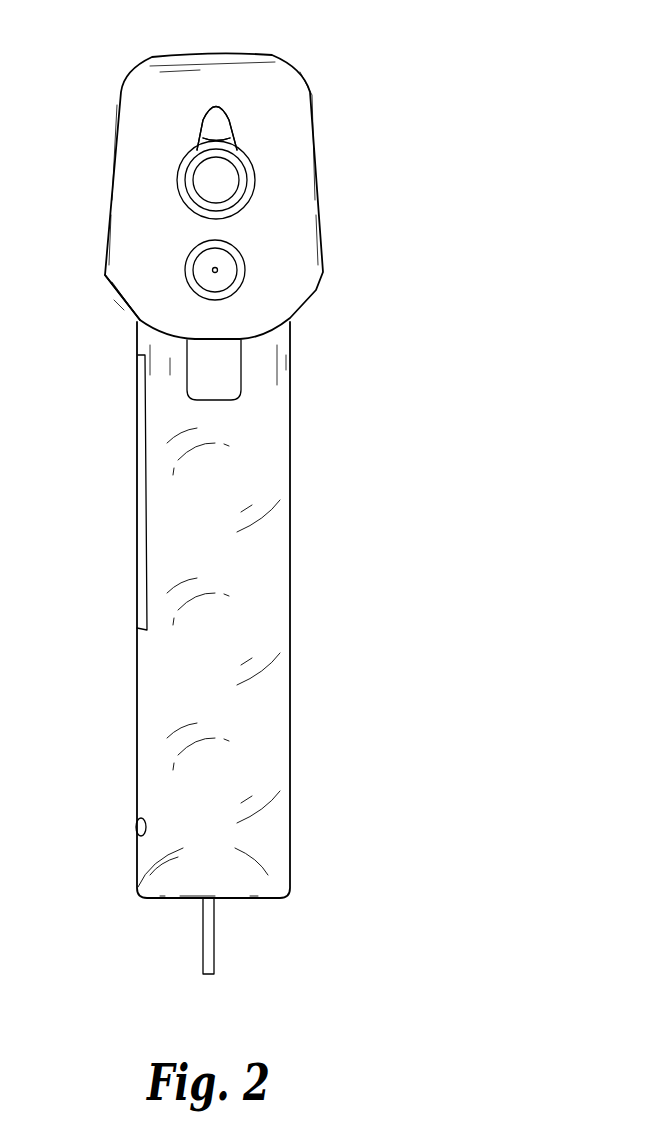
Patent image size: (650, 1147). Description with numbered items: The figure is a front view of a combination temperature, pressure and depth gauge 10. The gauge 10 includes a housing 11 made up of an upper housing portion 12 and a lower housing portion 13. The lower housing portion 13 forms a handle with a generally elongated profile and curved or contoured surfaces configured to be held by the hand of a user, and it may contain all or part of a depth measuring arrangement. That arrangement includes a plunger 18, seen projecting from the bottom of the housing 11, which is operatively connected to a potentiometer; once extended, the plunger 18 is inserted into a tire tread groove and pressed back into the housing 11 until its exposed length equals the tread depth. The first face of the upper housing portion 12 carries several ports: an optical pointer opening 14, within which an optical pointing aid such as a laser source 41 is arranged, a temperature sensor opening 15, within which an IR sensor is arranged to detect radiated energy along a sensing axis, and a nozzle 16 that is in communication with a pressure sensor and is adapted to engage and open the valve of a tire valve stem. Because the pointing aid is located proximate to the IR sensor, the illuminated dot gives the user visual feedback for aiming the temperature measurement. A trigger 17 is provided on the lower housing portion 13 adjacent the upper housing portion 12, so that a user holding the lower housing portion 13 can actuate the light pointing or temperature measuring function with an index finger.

The gauge 10 is at (342, 223).
The housing 11 is at (105, 275).
The upper housing portion 12 is at (177, 88).
The lower housing portion 13 is at (257, 670).
The optical pointer opening 14 is at (217, 118).
The laser source 41 is at (217, 118).
The temperature sensor opening 15 is at (218, 183).
The nozzle 16 is at (223, 280).
The trigger 17 is at (230, 375).
The plunger 18 is at (215, 950).